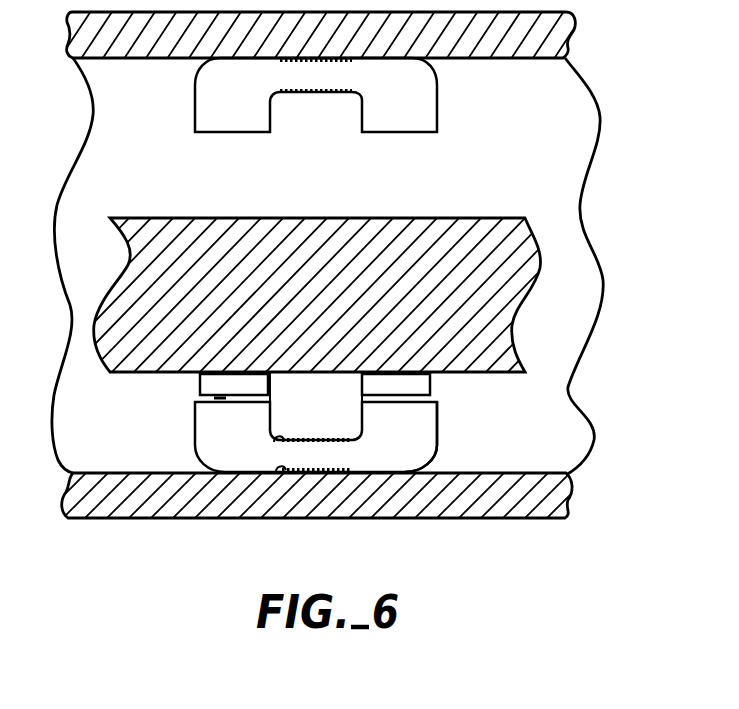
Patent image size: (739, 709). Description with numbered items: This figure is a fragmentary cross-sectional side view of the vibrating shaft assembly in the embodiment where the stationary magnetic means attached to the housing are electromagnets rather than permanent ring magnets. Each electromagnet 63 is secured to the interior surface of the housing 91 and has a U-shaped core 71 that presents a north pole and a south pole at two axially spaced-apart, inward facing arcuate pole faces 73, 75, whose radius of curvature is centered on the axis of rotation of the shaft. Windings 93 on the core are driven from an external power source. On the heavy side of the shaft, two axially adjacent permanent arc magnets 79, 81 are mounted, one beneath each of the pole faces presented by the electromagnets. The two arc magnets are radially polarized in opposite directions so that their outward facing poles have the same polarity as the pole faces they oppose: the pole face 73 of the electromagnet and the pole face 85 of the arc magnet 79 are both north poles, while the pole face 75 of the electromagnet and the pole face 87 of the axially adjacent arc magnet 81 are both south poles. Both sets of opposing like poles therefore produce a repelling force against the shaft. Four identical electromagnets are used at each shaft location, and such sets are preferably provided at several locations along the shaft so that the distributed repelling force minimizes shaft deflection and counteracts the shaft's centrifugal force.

The electromagnet 63 is at (194, 92).
The U-shaped core 71 is at (422, 68).
The arcuate pole face 73 is at (237, 133).
The arcuate pole face 75 is at (407, 133).
The arc magnet 79 is at (203, 382).
The arc magnet 81 is at (428, 383).
The magnetic pole face 85 is at (200, 407).
The magnetic pole face 87 is at (362, 402).
The housing 91 is at (458, 502).
The windings 93 is at (277, 466).